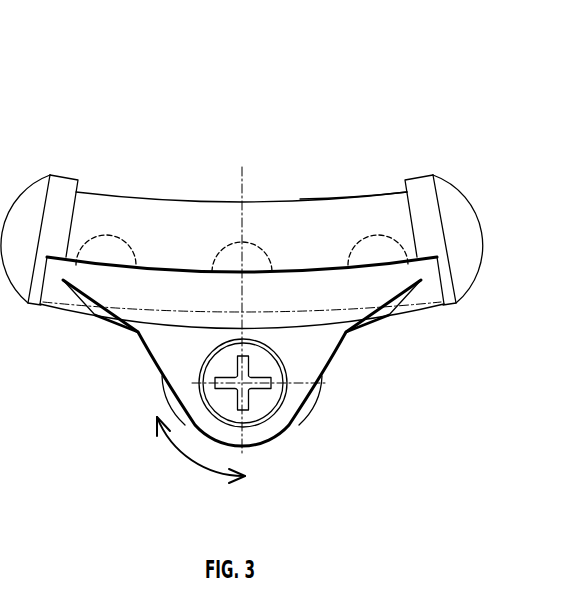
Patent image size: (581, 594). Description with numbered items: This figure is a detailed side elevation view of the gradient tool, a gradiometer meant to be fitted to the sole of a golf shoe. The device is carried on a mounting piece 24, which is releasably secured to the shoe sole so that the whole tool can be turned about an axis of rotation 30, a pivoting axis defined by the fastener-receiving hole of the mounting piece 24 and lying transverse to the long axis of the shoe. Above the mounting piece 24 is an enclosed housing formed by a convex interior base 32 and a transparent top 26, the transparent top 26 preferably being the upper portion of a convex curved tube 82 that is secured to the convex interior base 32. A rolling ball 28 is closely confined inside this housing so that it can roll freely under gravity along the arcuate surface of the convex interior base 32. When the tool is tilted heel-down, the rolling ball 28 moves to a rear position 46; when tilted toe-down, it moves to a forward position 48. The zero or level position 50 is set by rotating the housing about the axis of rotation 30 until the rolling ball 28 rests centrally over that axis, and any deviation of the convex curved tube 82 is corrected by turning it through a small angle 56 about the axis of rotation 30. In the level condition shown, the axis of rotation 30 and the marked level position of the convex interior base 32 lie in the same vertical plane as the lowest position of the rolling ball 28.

The mounting piece 24 is at (333, 363).
The transparent top 26 is at (143, 192).
The rolling ball 28 is at (252, 242).
The axis of rotation 30 is at (243, 383).
The convex interior base 32 is at (53, 290).
The rear position 46 is at (97, 232).
The forward position 48 is at (363, 238).
The level position 50 is at (242, 227).
The small angle 56 is at (168, 448).
The convex curved tube 82 is at (333, 197).